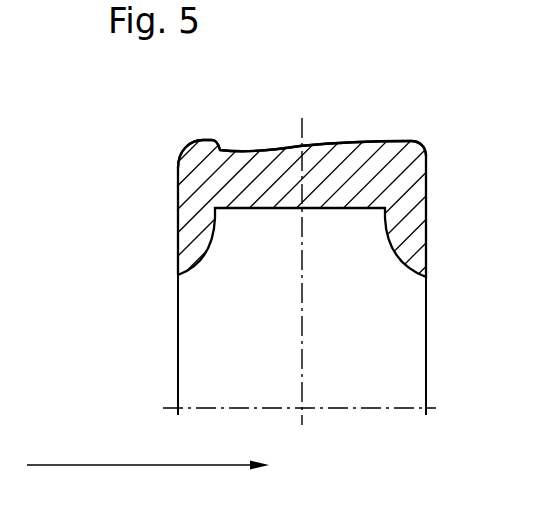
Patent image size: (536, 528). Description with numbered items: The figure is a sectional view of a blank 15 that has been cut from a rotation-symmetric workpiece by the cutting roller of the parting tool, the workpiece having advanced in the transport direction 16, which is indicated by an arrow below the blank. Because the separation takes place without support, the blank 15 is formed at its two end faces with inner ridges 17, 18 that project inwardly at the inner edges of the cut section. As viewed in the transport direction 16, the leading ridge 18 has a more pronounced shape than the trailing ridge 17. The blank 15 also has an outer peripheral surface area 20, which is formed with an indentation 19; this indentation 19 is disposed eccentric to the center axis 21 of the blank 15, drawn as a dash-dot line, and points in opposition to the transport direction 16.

The blank 15 is at (402, 178).
The transport direction 16 is at (85, 465).
The trailing ridge 17 is at (426, 272).
The leading ridge 18 is at (177, 272).
The indentation 19 is at (253, 148).
The outer peripheral surface area 20 is at (382, 140).
The center axis 21 is at (302, 384).